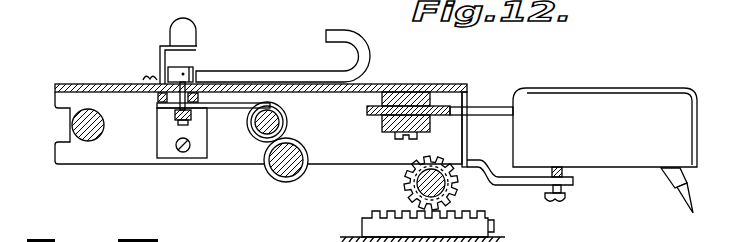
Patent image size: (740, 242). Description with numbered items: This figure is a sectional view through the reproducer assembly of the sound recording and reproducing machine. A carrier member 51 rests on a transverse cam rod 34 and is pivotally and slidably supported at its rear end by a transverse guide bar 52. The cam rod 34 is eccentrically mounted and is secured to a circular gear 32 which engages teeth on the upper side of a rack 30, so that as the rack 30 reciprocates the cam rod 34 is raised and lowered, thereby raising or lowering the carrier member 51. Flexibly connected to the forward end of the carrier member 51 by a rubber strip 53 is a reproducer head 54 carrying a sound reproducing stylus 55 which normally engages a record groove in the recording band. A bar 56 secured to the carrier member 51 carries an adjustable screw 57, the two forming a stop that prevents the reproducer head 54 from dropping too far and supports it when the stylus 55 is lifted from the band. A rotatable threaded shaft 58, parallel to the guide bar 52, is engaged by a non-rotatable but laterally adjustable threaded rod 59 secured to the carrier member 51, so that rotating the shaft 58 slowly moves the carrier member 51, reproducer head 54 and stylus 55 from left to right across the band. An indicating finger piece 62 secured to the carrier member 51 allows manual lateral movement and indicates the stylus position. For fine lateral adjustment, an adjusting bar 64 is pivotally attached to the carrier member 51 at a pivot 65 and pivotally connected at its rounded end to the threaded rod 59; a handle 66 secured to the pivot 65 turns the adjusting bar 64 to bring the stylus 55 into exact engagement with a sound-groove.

The rack 30 is at (494, 226).
The circular gear 32 is at (405, 177).
The transverse cam rod 34 is at (453, 193).
The carrier member 51 is at (450, 90).
The transverse guide bar 52 is at (71, 126).
The rubber strip 53 is at (488, 106).
The reproducer head 54 is at (634, 132).
The sound reproducing stylus 55 is at (684, 199).
The bar 56 is at (526, 184).
The adjustable screw 57 is at (563, 203).
The rotatable threaded shaft 58 is at (282, 173).
The non-rotatable threaded rod 59 is at (286, 118).
The indicating finger piece 62 is at (173, 32).
The adjusting bar 64 is at (230, 104).
The pivot 65 is at (162, 97).
The handle 66 is at (309, 54).